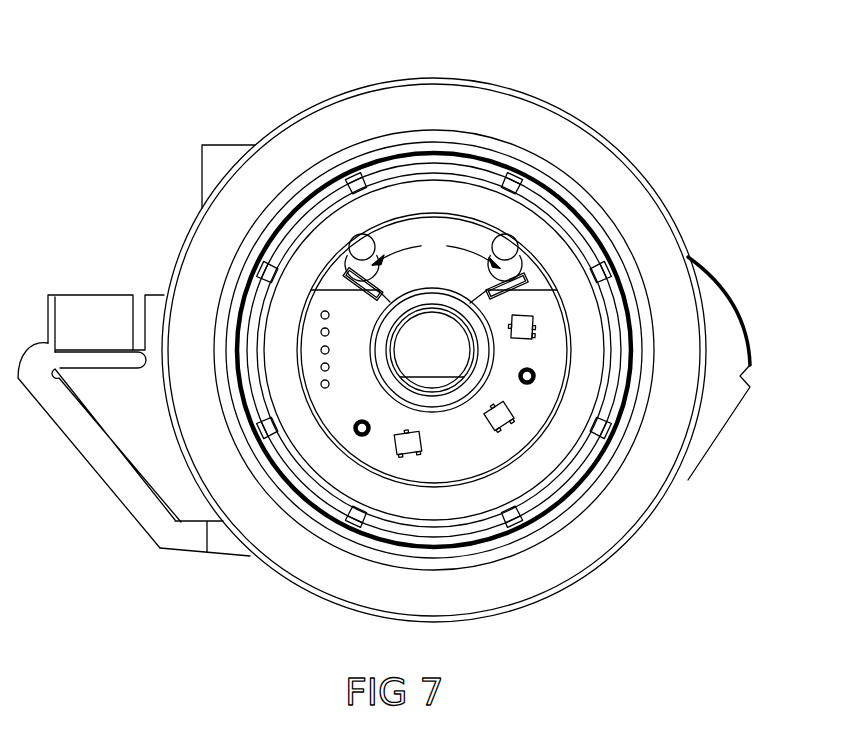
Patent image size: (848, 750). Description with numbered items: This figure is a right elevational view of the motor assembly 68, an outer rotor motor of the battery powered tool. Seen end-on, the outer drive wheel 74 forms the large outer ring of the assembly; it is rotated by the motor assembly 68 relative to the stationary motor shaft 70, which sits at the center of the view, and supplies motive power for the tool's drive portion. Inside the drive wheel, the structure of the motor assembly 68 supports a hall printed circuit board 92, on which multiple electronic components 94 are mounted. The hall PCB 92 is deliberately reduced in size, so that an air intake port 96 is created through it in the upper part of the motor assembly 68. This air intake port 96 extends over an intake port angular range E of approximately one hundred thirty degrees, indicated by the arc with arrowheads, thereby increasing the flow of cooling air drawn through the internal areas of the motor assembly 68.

The motor assembly 68 is at (397, 327).
The outer drive wheel 74 is at (672, 222).
The stationary motor shaft 70 is at (432, 349).
The air intake port 96 is at (401, 228).
The hall printed circuit board (PCB) 92 is at (410, 478).
The electronic components 94 is at (416, 452).
The intake port angular range E is at (436, 253).